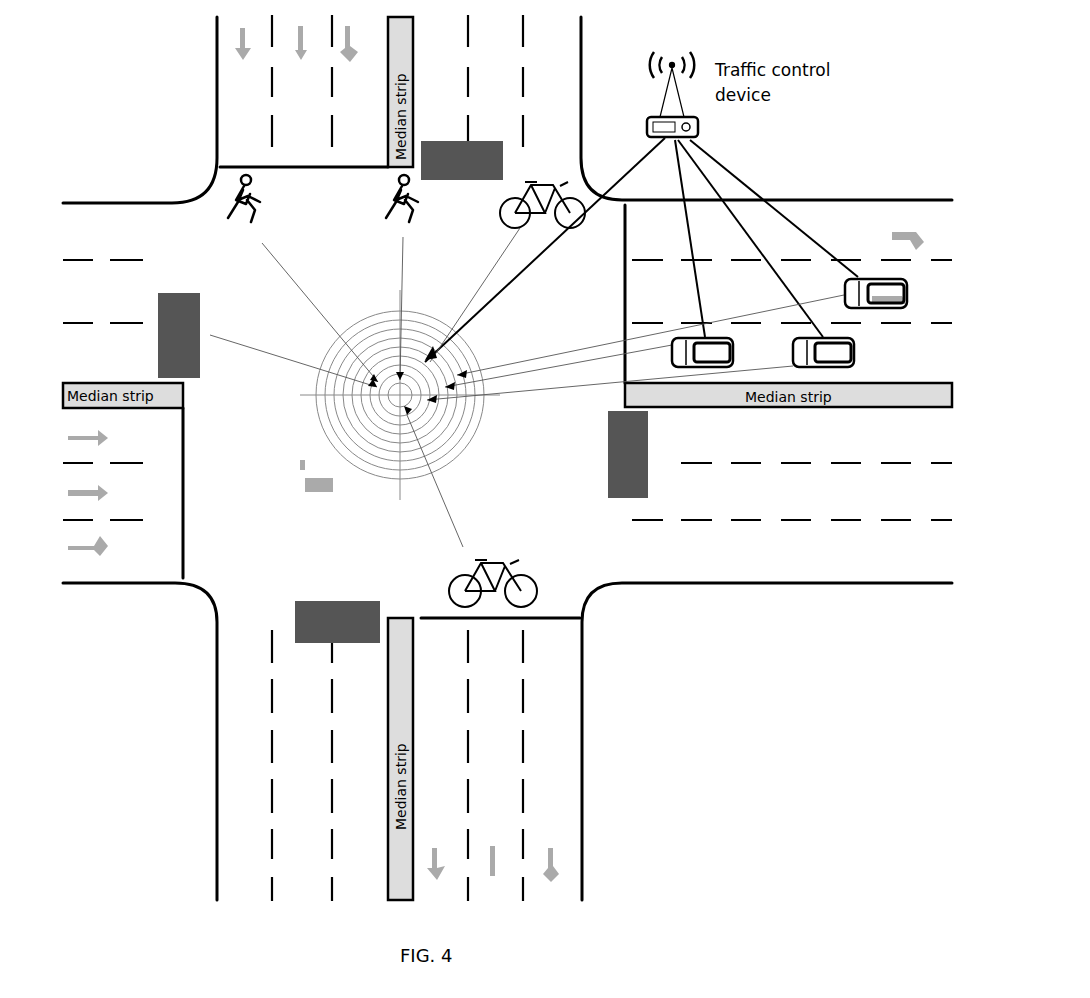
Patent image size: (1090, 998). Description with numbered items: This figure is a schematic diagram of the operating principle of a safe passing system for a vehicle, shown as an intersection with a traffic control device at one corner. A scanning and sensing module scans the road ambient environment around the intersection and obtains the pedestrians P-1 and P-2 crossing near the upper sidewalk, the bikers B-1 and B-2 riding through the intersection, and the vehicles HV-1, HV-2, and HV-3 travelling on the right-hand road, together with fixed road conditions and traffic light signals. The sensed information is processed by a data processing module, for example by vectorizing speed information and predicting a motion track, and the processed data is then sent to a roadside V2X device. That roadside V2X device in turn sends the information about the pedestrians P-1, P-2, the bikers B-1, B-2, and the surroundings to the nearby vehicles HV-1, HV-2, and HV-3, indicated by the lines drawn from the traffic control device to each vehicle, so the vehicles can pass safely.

The pedestrian P-1 is at (245, 220).
The pedestrian P-2 is at (381, 198).
The biker B-1 is at (554, 224).
The biker B-2 is at (493, 569).
The vehicle HV-1 is at (725, 361).
The vehicle HV-2 is at (849, 361).
The vehicle HV-3 is at (902, 301).